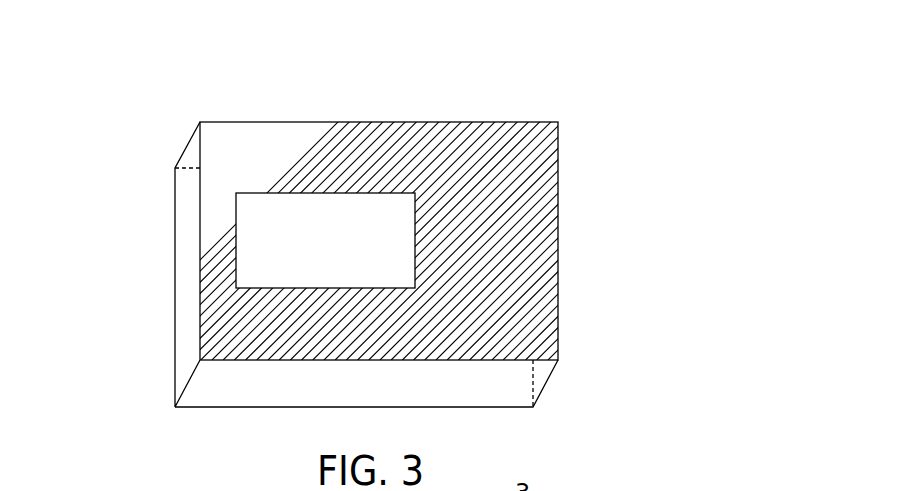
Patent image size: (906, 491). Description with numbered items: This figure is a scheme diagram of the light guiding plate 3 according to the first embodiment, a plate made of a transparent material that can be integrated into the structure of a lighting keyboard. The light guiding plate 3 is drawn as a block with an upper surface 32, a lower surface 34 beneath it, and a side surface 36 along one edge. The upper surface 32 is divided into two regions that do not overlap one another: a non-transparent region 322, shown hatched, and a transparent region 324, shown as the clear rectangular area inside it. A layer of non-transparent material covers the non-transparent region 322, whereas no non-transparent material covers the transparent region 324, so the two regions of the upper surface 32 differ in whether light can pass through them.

The light guiding plate 3 is at (489, 90).
The upper surface 32 is at (80, 153).
The non-transparent region 322 is at (237, 155).
The transparent region 324 is at (250, 228).
The lower surface 34 is at (487, 388).
The side surface 36 is at (188, 323).